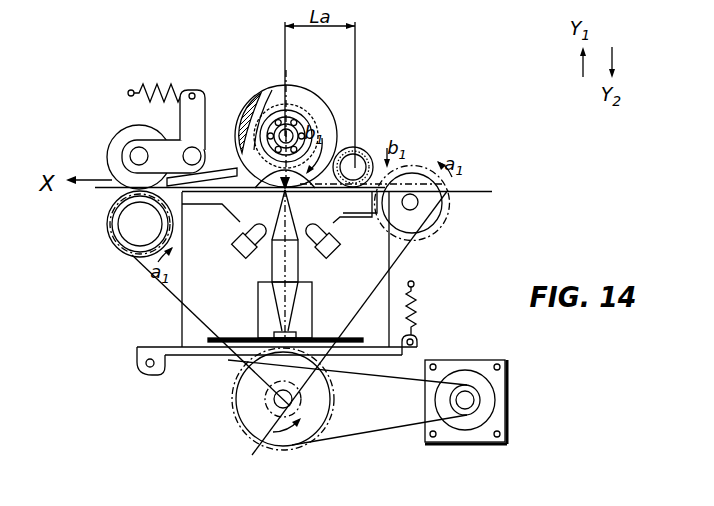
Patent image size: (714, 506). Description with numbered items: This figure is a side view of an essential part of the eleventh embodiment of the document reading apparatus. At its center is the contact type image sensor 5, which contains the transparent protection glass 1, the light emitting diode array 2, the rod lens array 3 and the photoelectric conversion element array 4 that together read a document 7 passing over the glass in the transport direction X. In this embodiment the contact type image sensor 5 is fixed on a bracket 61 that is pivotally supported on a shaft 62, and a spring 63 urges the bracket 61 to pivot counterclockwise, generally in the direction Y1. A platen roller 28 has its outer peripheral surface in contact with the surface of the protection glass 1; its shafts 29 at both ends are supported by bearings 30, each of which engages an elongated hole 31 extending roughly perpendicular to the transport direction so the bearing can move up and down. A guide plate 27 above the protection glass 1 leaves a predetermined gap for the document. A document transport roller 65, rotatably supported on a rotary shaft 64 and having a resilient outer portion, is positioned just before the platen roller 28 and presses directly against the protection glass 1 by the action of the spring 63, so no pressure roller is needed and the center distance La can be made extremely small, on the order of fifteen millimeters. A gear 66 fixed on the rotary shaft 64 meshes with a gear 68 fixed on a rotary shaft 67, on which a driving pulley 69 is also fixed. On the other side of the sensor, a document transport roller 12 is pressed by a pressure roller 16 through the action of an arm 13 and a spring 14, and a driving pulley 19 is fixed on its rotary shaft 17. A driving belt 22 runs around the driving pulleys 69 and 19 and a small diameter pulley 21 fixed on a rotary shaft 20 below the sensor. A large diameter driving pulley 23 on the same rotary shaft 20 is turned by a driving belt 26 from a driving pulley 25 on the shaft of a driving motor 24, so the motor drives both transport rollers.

The protection glass 1 is at (352, 212).
The light emitting diode array 2 is at (243, 243).
The rod lens array 3 is at (272, 266).
The photoelectric conversion element array 4 is at (273, 334).
The contact type image sensor 5 is at (362, 279).
The document 7 is at (480, 190).
The document transport roller 12 is at (116, 224).
The arm 13 is at (178, 117).
The spring 14 is at (157, 86).
The pressure roller 16 is at (113, 150).
The rotary shaft 17 is at (130, 215).
The driving pulley 19 is at (140, 256).
The rotary shaft 20 is at (342, 335).
The small diameter pulley 21 is at (270, 393).
The driving belt 22 is at (172, 302).
The large diameter driving pulley 23 is at (337, 400).
The driving motor 24 is at (507, 391).
The driving pulley 25 is at (476, 416).
The driving belt 26 is at (397, 428).
The guide plate 27 is at (214, 170).
The platen roller 28 is at (308, 102).
The shaft 29 is at (264, 98).
The bearing 30 is at (302, 118).
The elongated hole 31 is at (283, 68).
The bracket 61 is at (191, 355).
The shaft 62 is at (146, 360).
The spring 63 is at (419, 306).
The rotary shaft 64 is at (390, 173).
The document transport roller 65 is at (374, 146).
The gear 66 is at (362, 148).
The rotary shaft 67 is at (419, 204).
The gear 68 is at (447, 188).
The driving pulley 69 is at (428, 240).
The reading position A is at (240, 219).